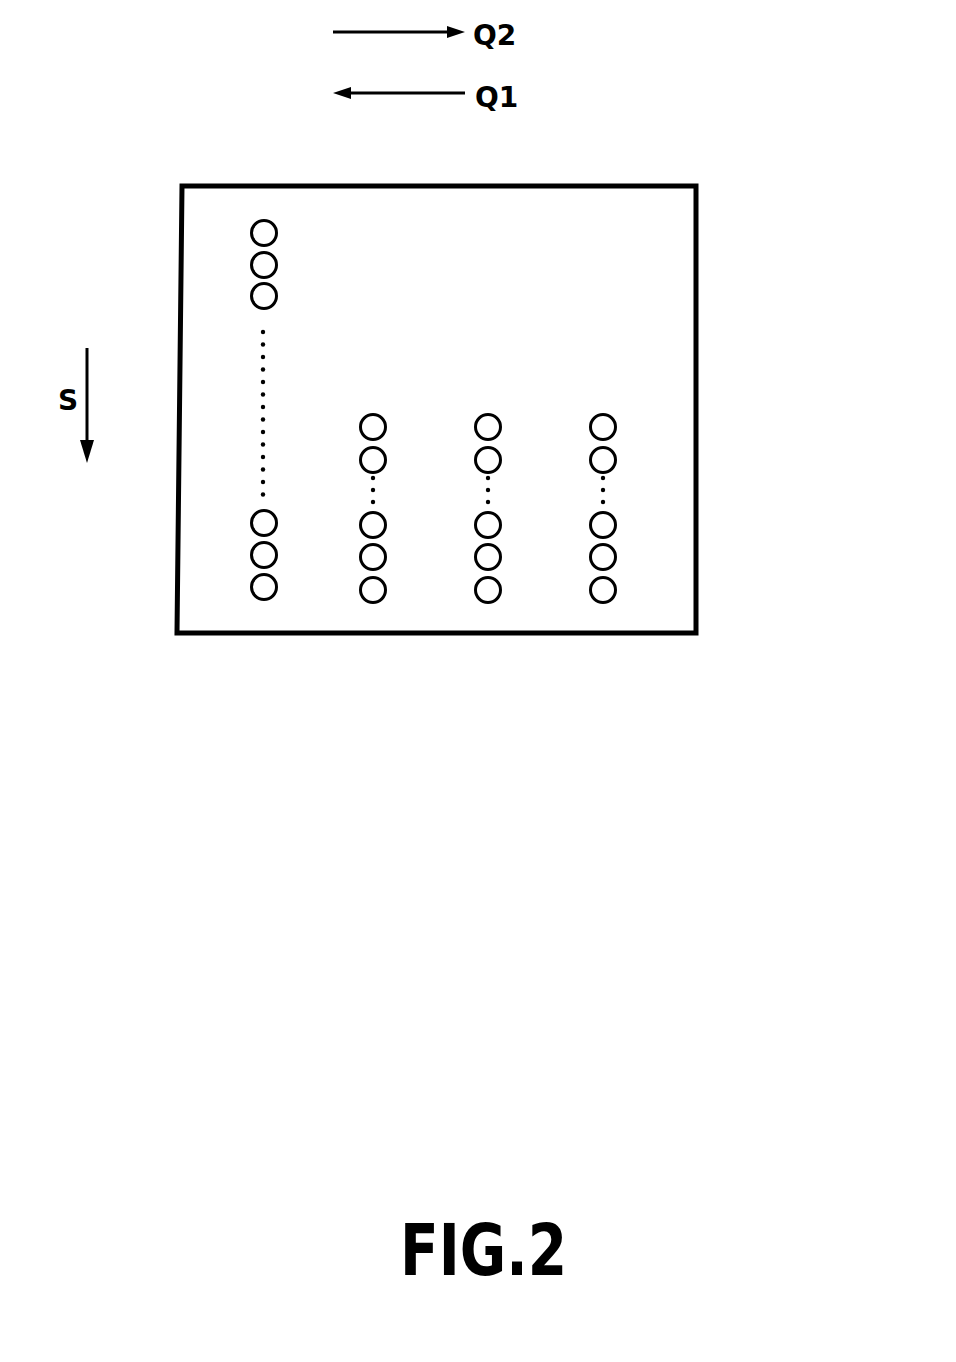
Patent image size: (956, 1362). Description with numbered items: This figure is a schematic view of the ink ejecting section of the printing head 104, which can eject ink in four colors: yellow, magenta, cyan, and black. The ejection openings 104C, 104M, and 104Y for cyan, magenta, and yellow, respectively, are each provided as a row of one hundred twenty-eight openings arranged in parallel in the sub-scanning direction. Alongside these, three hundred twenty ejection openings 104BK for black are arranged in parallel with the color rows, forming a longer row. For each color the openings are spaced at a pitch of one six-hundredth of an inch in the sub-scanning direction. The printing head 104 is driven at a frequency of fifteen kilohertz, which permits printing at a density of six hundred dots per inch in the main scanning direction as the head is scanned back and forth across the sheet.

The printing head 104 is at (698, 258).
The ejection openings for black 104BK is at (262, 492).
The ejection openings for cyan 104C is at (363, 493).
The ejection openings for magenta 104M is at (480, 498).
The ejection openings for yellow 104Y is at (597, 498).